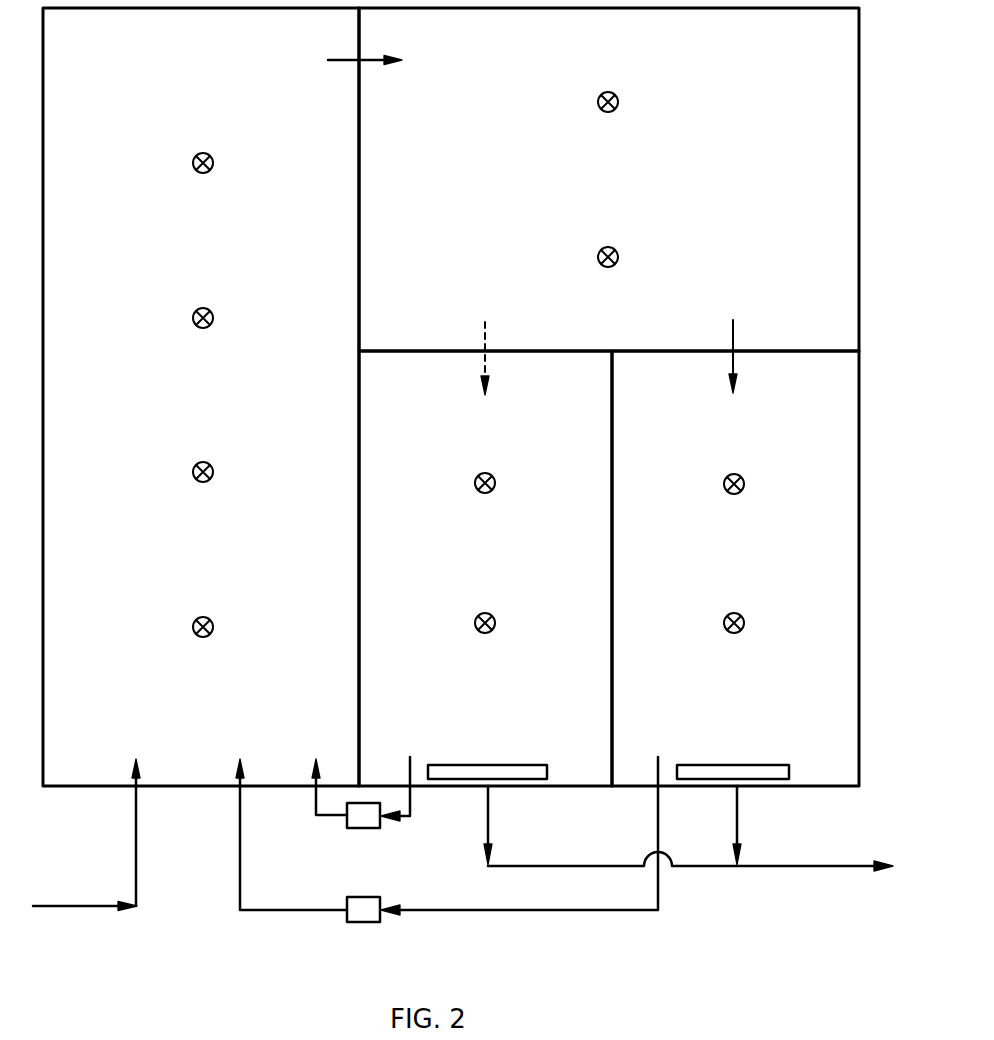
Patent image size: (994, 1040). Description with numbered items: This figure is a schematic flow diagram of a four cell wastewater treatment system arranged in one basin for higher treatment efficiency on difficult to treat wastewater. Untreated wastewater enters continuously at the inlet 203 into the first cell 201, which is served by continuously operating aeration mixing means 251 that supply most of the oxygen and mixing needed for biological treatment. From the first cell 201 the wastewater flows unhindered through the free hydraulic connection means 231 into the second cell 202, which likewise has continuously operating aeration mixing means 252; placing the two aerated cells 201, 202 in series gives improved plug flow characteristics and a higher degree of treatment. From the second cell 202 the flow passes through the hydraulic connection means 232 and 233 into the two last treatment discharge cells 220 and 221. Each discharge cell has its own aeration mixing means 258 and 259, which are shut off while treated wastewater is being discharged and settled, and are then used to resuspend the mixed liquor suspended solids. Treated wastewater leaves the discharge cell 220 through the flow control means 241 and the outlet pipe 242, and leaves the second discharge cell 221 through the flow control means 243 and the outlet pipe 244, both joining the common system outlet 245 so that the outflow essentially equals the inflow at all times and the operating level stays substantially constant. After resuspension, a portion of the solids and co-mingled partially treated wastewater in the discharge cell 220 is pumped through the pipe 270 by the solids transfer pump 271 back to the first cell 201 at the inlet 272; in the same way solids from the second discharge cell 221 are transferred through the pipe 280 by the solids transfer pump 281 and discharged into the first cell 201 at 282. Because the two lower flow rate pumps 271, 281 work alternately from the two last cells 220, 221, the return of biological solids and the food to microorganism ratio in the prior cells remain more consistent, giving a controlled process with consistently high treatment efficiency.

The first cell 201 is at (122, 746).
The second cell 202 is at (845, 331).
The inlet 203 is at (135, 796).
The treatment discharge cell 220 is at (590, 748).
The second treatment discharge cell 221 is at (825, 748).
The hydraulic connection means 231 is at (365, 63).
The hydraulic connection means 232 is at (497, 353).
The hydraulic connection means 233 is at (740, 353).
The flow control means 241 is at (538, 787).
The outlet pipe 242 is at (490, 828).
The flow control means 243 is at (787, 788).
The outlet pipe 244 is at (739, 832).
The outlet 245 is at (805, 870).
The aeration mixing means 251 is at (201, 174).
The aeration mixing means 252 is at (606, 113).
The aeration mixing means 258 is at (483, 494).
The aeration mixing means 259 is at (732, 495).
The pipe 270 is at (417, 788).
The solids transfer pump 271 is at (350, 828).
The inlet 272 is at (307, 789).
The solids transfer pipe 280 is at (665, 787).
The solids transfer pump 281 is at (350, 922).
The discharge 282 is at (232, 789).